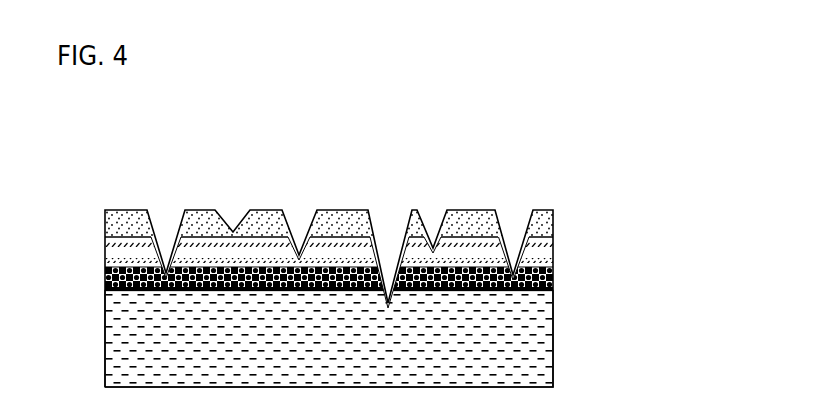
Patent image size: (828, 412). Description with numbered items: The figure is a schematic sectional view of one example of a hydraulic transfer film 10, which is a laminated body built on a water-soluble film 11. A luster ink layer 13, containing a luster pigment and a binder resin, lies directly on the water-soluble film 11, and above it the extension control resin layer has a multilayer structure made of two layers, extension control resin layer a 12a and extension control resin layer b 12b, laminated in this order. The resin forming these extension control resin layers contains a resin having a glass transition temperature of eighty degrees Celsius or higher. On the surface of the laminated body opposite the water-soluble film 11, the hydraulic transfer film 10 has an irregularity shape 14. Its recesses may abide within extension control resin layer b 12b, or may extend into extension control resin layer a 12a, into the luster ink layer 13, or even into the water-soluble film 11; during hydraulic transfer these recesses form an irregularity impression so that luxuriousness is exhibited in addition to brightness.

The hydraulic transfer film 10 is at (396, 230).
The water-soluble film 11 is at (553, 358).
The extension control resin layer a 12a is at (553, 247).
The extension control resin layer b 12b is at (552, 218).
The luster ink layer 13 is at (555, 275).
The irregularity shape 14 is at (522, 215).